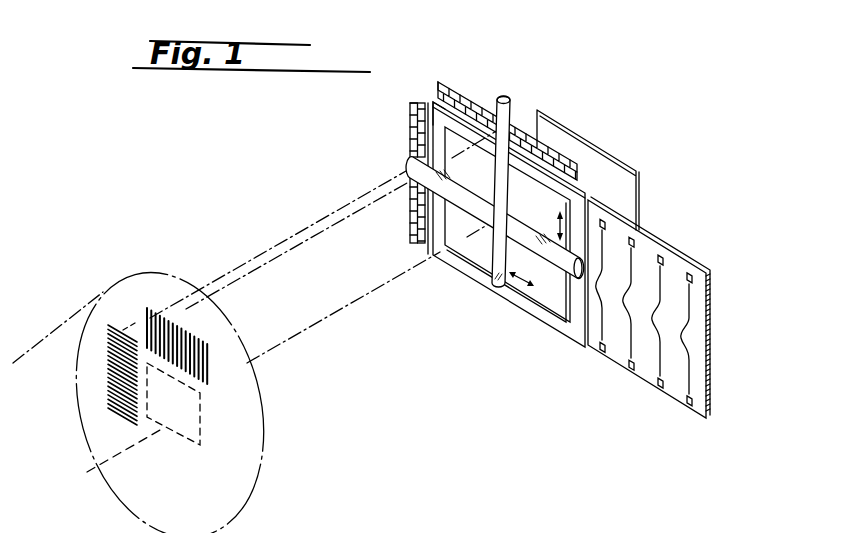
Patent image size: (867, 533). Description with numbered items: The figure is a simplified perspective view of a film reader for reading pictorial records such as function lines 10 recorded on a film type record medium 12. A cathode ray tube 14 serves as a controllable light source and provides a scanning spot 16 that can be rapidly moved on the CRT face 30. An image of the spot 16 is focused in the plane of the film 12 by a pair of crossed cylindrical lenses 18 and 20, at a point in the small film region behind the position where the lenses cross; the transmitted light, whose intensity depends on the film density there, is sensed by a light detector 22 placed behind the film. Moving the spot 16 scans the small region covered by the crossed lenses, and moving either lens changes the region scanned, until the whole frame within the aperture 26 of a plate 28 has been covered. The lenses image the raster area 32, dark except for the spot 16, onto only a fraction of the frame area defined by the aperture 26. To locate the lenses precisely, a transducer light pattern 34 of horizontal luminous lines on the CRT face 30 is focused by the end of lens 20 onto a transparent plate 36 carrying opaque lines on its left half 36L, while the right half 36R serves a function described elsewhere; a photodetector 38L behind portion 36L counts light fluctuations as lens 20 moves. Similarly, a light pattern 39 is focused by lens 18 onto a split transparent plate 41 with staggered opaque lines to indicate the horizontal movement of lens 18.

The function lines 10 is at (677, 307).
The film type record medium 12 is at (711, 288).
The cathode ray tube 14 is at (42, 341).
The scanning spot 16 is at (180, 407).
The cylindrical lens 18 is at (498, 290).
The cylindrical lens 20 is at (556, 302).
The light detector 22 is at (638, 173).
The aperture 26 is at (456, 256).
The plate 28 is at (496, 199).
The CRT face 30 is at (163, 288).
The raster area 32 is at (104, 456).
The transducer light pattern 34 is at (108, 403).
The transparent plate 36 is at (381, 168).
The left half of transparent plate 36L is at (412, 124).
The right half of transparent plate 36R is at (412, 142).
The photodetector 38L is at (423, 101).
The light pattern 39 is at (208, 355).
The split transparent plate 41 is at (477, 101).